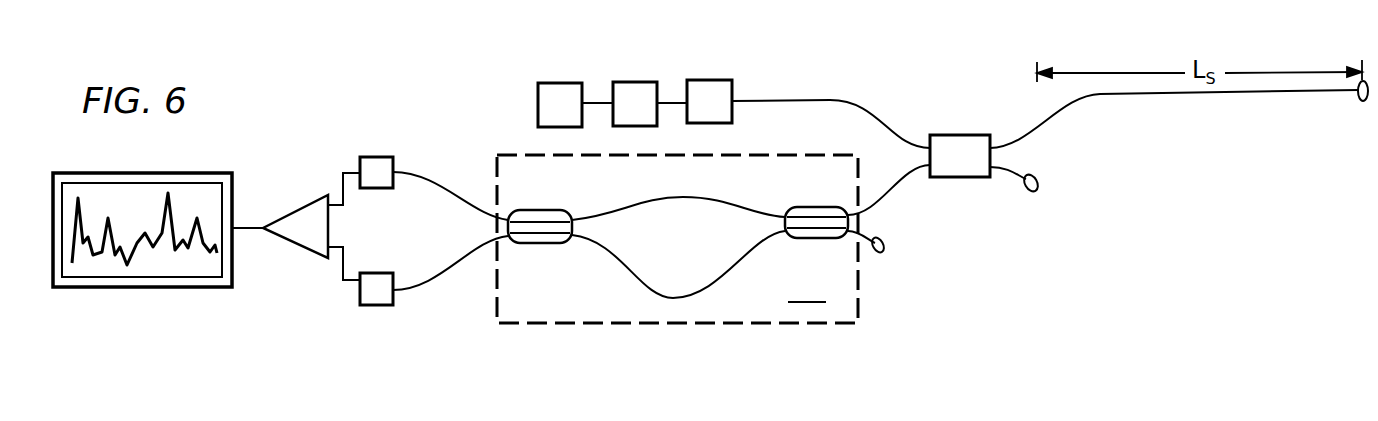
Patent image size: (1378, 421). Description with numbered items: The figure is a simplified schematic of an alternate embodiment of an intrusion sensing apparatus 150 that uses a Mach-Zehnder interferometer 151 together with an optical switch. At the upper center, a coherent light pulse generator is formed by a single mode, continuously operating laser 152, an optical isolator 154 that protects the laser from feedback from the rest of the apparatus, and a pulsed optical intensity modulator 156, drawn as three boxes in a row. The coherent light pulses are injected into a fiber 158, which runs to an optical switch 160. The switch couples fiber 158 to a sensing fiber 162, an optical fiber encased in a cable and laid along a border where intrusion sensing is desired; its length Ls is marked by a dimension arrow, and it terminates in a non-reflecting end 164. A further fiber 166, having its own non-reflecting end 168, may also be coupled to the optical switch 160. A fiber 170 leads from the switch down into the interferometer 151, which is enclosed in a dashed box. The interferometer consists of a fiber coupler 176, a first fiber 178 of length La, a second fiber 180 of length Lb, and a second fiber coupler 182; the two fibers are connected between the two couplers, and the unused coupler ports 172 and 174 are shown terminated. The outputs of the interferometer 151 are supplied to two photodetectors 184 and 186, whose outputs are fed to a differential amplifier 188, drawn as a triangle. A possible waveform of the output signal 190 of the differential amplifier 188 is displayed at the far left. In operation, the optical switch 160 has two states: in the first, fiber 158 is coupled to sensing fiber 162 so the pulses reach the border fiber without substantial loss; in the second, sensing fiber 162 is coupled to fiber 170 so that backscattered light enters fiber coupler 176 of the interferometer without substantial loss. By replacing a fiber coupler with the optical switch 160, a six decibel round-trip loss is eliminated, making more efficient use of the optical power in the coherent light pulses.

The intrusion sensing apparatus 150 is at (392, 82).
The Mach-Zehnder interferometer 151 is at (808, 289).
The laser 152 is at (556, 83).
The optical isolator 154 is at (630, 82).
The pulsed optical intensity modulator 156 is at (706, 80).
The fiber 158 is at (828, 100).
The optical switch 160 is at (960, 135).
The sensing fiber 162 is at (1128, 95).
The non-reflecting end 164 is at (1360, 101).
The fiber 166 is at (1022, 170).
The non-reflecting end 168 is at (1034, 192).
The fiber 170 is at (896, 180).
The fiber lead 172 is at (884, 235).
The fiber end termination 174 is at (882, 253).
The fiber coupler 176 is at (808, 207).
The fiber 178 is at (614, 206).
The fiber 180 is at (614, 259).
The fiber coupler 182 is at (548, 244).
The photodetector 184 is at (393, 160).
The photodetector 186 is at (393, 300).
The differential amplifier 188 is at (280, 218).
The output signal 190 is at (112, 288).